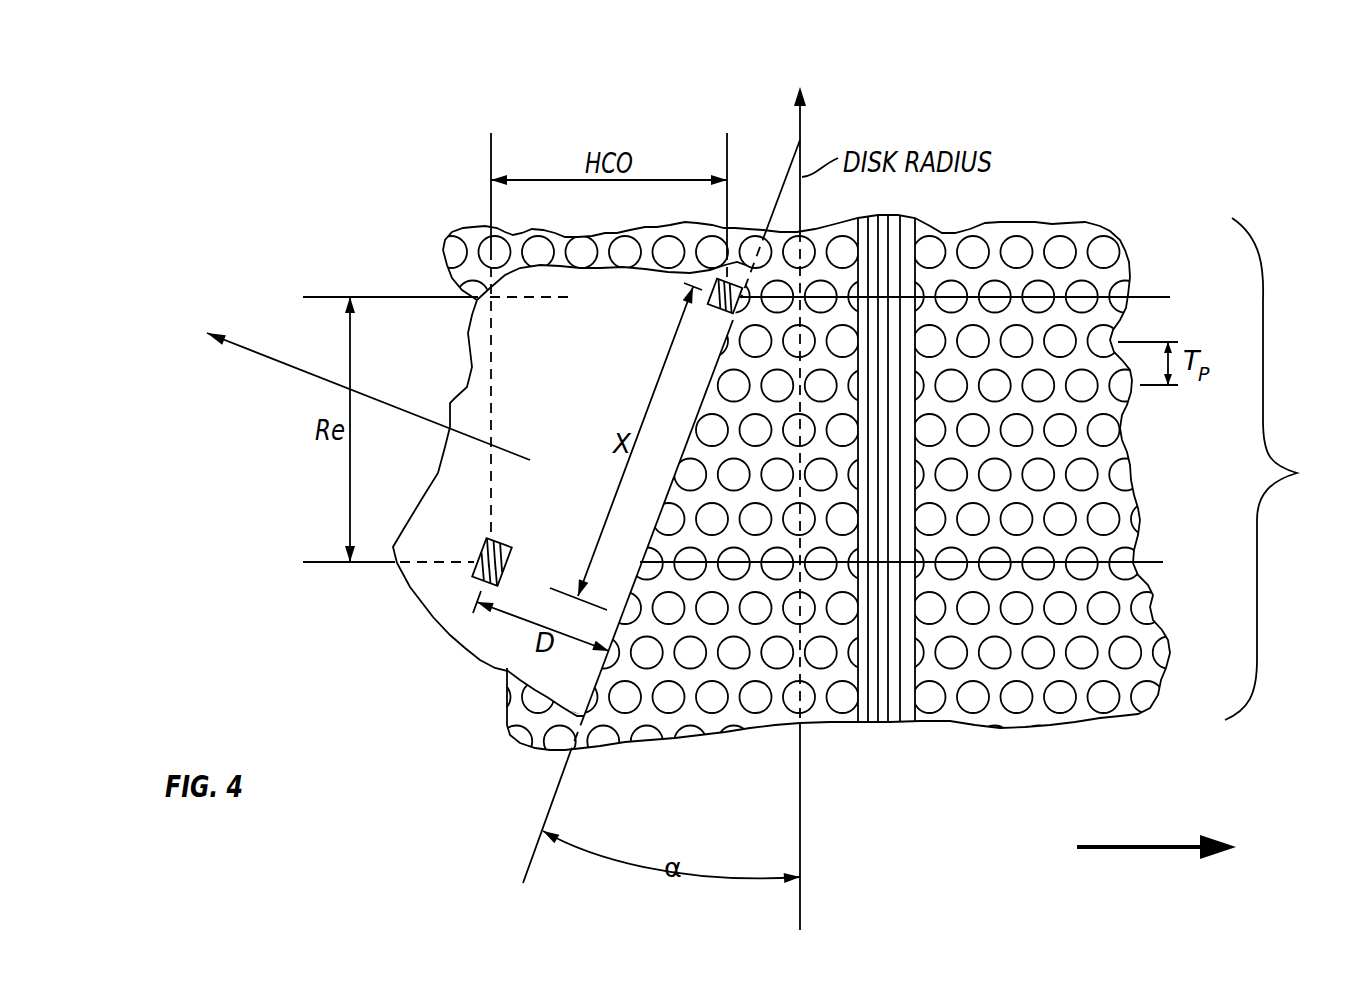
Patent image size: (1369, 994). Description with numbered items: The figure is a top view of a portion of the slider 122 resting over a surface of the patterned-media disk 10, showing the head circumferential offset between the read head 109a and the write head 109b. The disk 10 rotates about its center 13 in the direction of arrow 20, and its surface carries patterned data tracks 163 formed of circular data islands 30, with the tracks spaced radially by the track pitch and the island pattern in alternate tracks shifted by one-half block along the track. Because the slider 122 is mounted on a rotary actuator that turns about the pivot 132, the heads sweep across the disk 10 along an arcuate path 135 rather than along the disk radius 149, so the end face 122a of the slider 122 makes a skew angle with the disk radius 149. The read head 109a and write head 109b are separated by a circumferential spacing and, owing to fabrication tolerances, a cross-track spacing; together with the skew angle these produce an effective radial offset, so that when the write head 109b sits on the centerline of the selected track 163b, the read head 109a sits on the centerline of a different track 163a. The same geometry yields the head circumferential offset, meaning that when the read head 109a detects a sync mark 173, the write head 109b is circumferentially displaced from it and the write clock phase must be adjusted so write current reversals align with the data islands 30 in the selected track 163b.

The patterned-media disk 10 is at (1055, 233).
The disk center 13 is at (801, 75).
The arrow indicating direction of disk rotation 20 is at (1127, 851).
The data islands 30 is at (927, 696).
The read head 109a is at (717, 315).
The write head 109b is at (492, 536).
The slider 122 is at (443, 597).
The end face of slider 122a is at (619, 625).
The actuator pivot 132 is at (289, 372).
The arcuate path 135 is at (535, 851).
The disk radius 149 is at (800, 900).
The patterned data tracks 163 is at (1283, 469).
The track over which the read head is positioned 163a is at (1158, 297).
The selected track for writing 163b is at (1150, 561).
The sync mark 173 is at (888, 727).